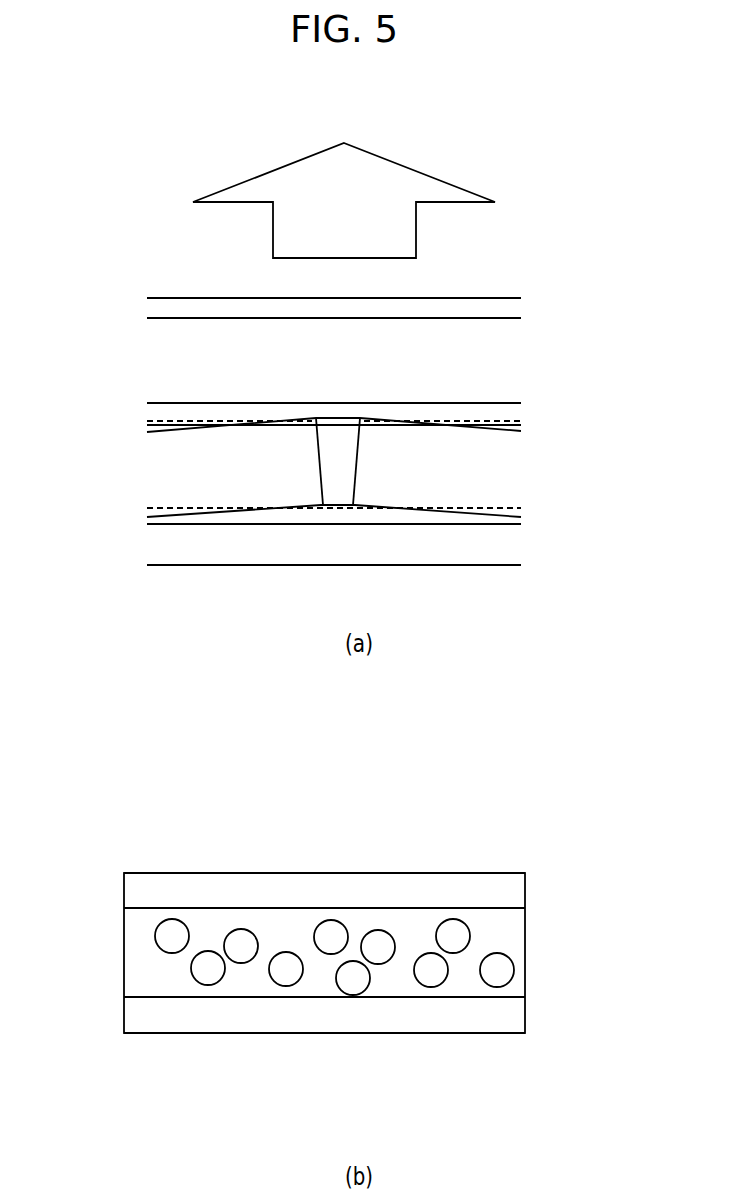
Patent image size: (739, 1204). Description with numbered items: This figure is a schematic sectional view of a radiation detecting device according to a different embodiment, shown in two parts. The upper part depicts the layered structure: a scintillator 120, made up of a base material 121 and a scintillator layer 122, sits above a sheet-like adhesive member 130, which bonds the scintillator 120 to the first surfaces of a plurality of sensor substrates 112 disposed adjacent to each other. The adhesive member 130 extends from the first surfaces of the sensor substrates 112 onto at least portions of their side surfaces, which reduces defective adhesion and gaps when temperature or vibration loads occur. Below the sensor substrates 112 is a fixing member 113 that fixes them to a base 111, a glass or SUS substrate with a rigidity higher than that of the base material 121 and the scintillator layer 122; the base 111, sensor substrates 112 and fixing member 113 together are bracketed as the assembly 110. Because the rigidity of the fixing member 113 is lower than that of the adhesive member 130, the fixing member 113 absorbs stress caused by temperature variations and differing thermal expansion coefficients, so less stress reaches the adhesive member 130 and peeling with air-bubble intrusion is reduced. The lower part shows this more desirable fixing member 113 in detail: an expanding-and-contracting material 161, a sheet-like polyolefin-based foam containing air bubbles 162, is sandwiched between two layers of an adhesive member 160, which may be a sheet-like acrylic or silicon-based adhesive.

The sensor panel 110 is at (371, 757).
The base 111 is at (376, 545).
The sensor substrate 112 is at (180, 467).
The fixing member 113 is at (502, 520).
The scintillator 120 is at (406, 315).
The base material 121 is at (518, 310).
The scintillator layer 122 is at (513, 335).
The adhesive member 130 is at (515, 407).
The adhesive member 160 is at (513, 897).
The expanding-and-contracting material 161 is at (513, 938).
The air bubble 162 is at (353, 987).